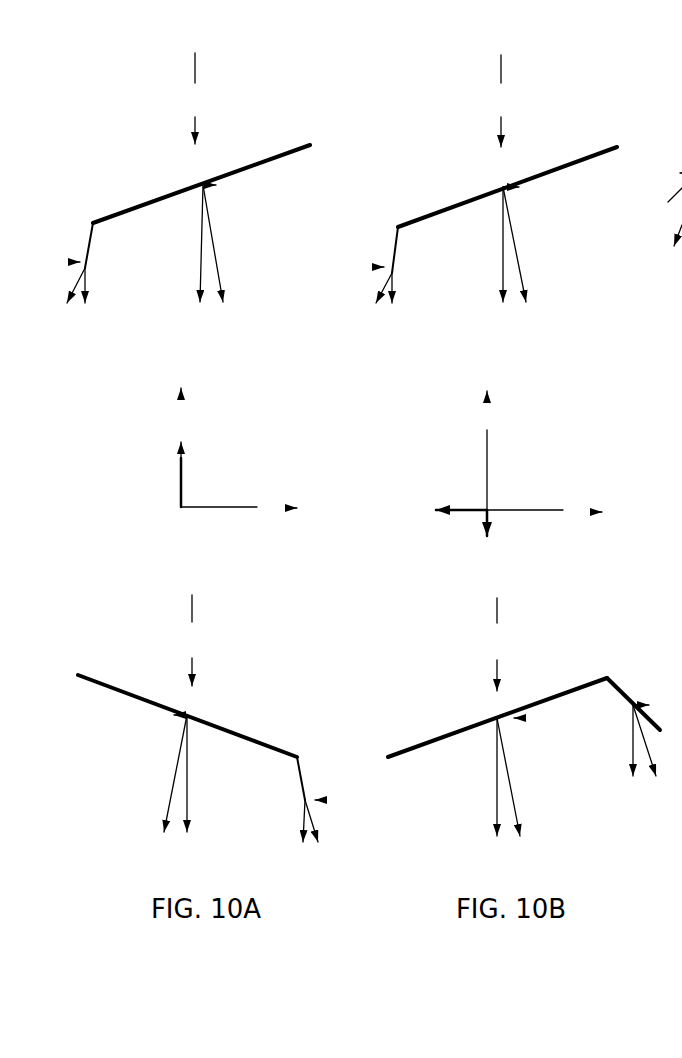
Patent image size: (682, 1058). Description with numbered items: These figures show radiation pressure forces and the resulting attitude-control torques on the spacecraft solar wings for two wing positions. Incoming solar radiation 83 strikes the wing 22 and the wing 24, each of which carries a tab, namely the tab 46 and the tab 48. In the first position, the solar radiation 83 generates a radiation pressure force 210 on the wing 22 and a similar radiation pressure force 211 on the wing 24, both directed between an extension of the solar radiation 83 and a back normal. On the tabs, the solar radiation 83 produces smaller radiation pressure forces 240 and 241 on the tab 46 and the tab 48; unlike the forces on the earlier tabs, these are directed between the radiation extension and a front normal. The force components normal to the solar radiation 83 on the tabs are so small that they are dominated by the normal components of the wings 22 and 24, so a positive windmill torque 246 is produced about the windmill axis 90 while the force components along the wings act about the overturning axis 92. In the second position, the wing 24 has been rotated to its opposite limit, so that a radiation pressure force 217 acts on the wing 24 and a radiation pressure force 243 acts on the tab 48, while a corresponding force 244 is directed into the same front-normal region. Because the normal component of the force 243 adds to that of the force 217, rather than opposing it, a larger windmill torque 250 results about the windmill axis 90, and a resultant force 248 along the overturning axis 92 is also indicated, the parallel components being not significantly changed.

In FIG. 10A, the wing 22 is at (143, 203).
In FIG. 10B, the wing 22 is at (433, 212).
In FIG. 10A, the wing 24 is at (263, 742).
In FIG. 10B, the wing 24 is at (583, 680).
In FIG. 10A, the tab 46 is at (85, 250).
In FIG. 10B, the tab 46 is at (395, 248).
In FIG. 10A, the tab 48 is at (303, 780).
In FIG. 10B, the tab 48 is at (617, 687).
In FIG. 10A, the solar radiation 83 is at (194, 369).
In FIG. 10B, the solar radiation 83 is at (499, 373).
In FIG. 10A, the windmill axis 90 is at (181, 447).
In FIG. 10B, the windmill axis 90 is at (487, 450).
In FIG. 10A, the overturning axis 92 is at (239, 508).
In FIG. 10B, the overturning axis 92 is at (544, 512).
In FIG. 10A, the radiation pressure force 210 is at (215, 237).
In FIG. 10B, the radiation pressure force 210 is at (520, 240).
In FIG. 10A, the radiation pressure force 211 is at (173, 770).
In FIG. 10B, the radiation pressure force 217 is at (513, 790).
In FIG. 10A, the radiation pressure force 240 is at (75, 287).
In FIG. 10B, the radiation pressure force 240 is at (377, 288).
In FIG. 10A, the radiation pressure force 241 is at (308, 823).
In FIG. 10B, the radiation pressure force 243 is at (660, 765).
In FIG. 10B, the radiation pressure force 244 is at (672, 235).
In FIG. 10A, the windmill torque 246 is at (178, 475).
In FIG. 10B, the resultant downward force 248 is at (480, 523).
In FIG. 10B, the windmill torque 250 is at (455, 507).